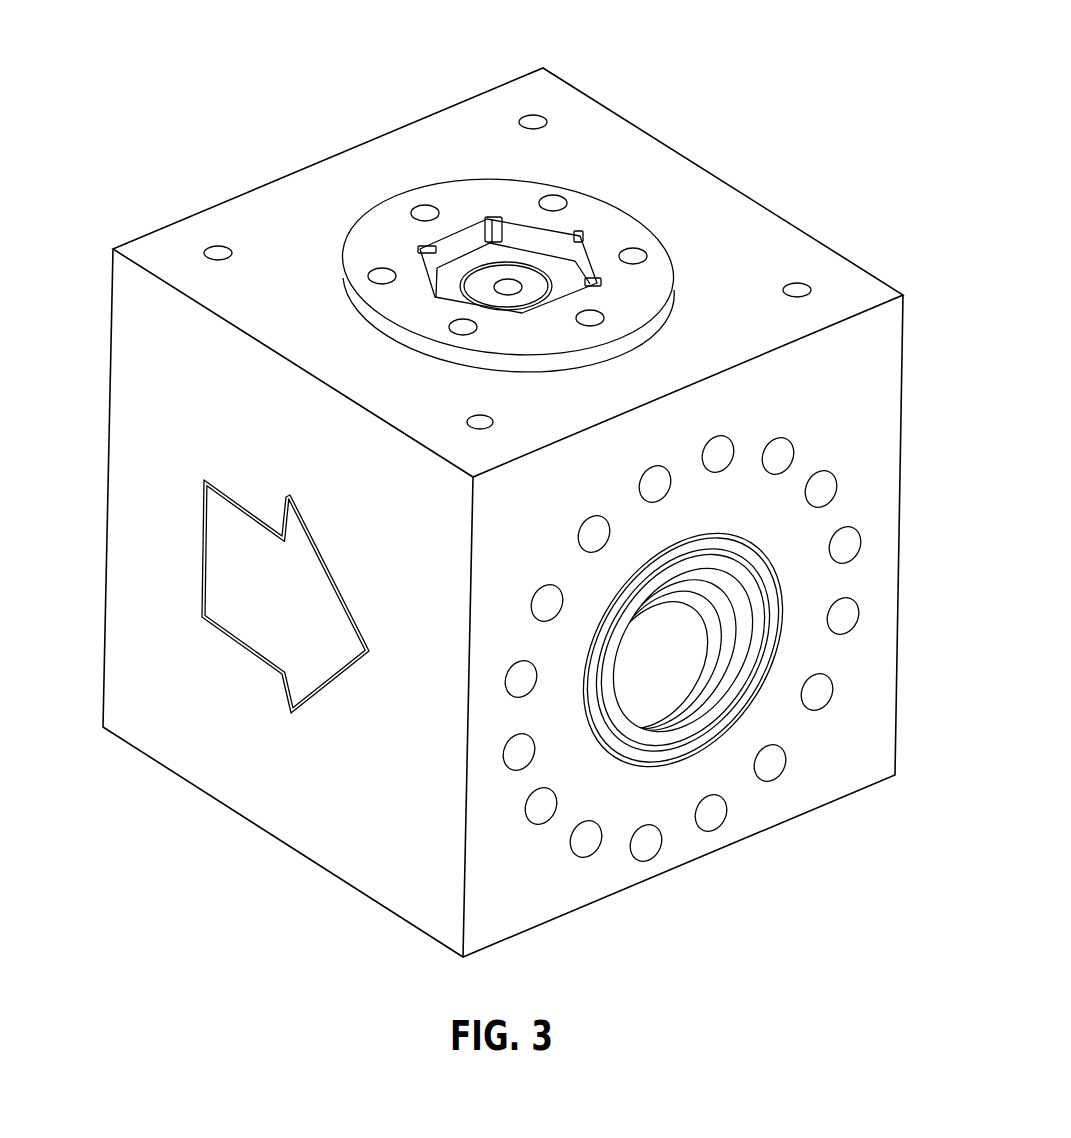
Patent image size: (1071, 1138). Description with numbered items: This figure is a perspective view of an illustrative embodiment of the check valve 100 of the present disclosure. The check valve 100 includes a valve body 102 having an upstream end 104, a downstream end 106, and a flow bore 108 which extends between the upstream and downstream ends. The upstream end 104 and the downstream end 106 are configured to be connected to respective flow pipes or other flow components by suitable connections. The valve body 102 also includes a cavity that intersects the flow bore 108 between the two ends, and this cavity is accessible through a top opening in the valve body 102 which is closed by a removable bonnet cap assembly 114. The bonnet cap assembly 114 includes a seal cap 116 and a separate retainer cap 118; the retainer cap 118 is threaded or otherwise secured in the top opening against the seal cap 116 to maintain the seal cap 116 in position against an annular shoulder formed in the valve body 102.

The check valve 100 is at (489, 488).
The valve body 102 is at (830, 236).
The upstream end 104 is at (110, 418).
The downstream end 106 is at (722, 600).
The flow bore 108 is at (645, 628).
The bonnet cap assembly 114 is at (499, 239).
The seal cap 116 is at (488, 275).
The retainer cap 118 is at (363, 258).